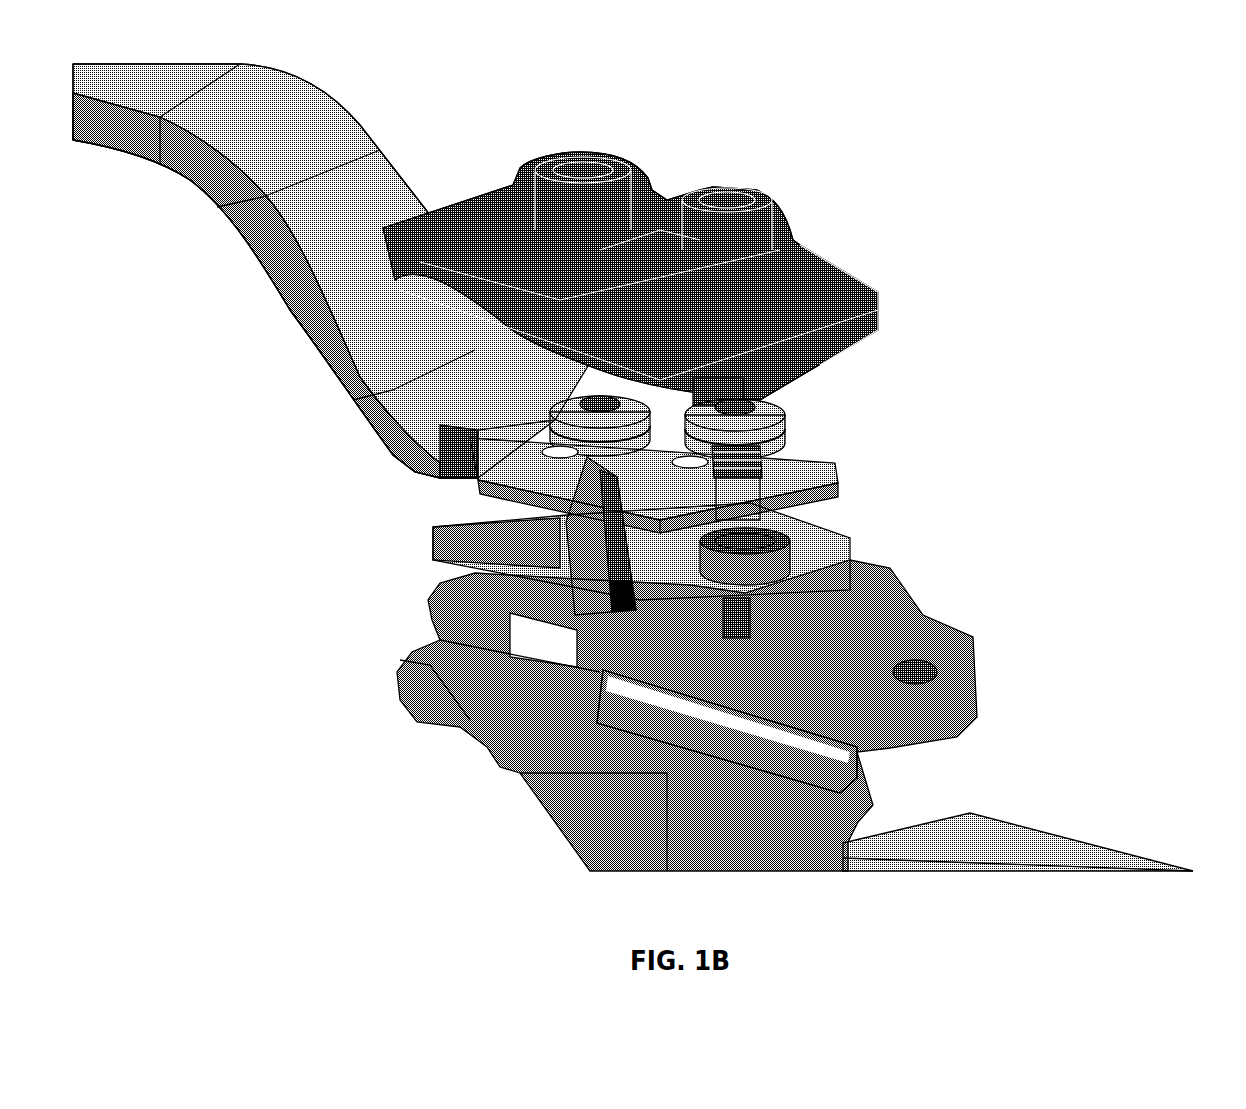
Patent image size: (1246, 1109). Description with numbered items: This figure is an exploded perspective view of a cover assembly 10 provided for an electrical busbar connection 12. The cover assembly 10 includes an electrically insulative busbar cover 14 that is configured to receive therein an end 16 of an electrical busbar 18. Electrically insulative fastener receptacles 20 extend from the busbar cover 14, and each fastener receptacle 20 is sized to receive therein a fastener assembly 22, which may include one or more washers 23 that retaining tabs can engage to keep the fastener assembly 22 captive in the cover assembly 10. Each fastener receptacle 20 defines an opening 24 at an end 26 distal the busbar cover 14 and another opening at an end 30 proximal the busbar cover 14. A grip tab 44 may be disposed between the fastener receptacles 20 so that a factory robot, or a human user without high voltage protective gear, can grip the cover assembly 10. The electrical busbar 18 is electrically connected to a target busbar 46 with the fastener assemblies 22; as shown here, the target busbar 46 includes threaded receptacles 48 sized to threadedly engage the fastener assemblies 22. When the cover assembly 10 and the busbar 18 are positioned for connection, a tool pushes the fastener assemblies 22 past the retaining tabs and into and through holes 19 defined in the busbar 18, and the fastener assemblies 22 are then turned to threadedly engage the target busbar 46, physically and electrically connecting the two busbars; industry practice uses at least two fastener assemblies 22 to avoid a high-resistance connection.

The cover assembly 10 is at (650, 453).
The electrical busbar connection 12 is at (930, 460).
The busbar cover 14 is at (871, 340).
The end 16 is at (823, 450).
The electrical busbar 18 is at (376, 107).
The holes 19 is at (770, 468).
The fastener receptacles 20 is at (655, 178).
The fastener assembly 22 is at (803, 410).
The washers 23 is at (550, 437).
The opening 24 is at (588, 168).
The end 26 is at (523, 157).
The end 30 is at (806, 265).
The grip tab 44 is at (640, 205).
The target busbar 46 is at (1053, 780).
The threaded receptacles 48 is at (805, 550).